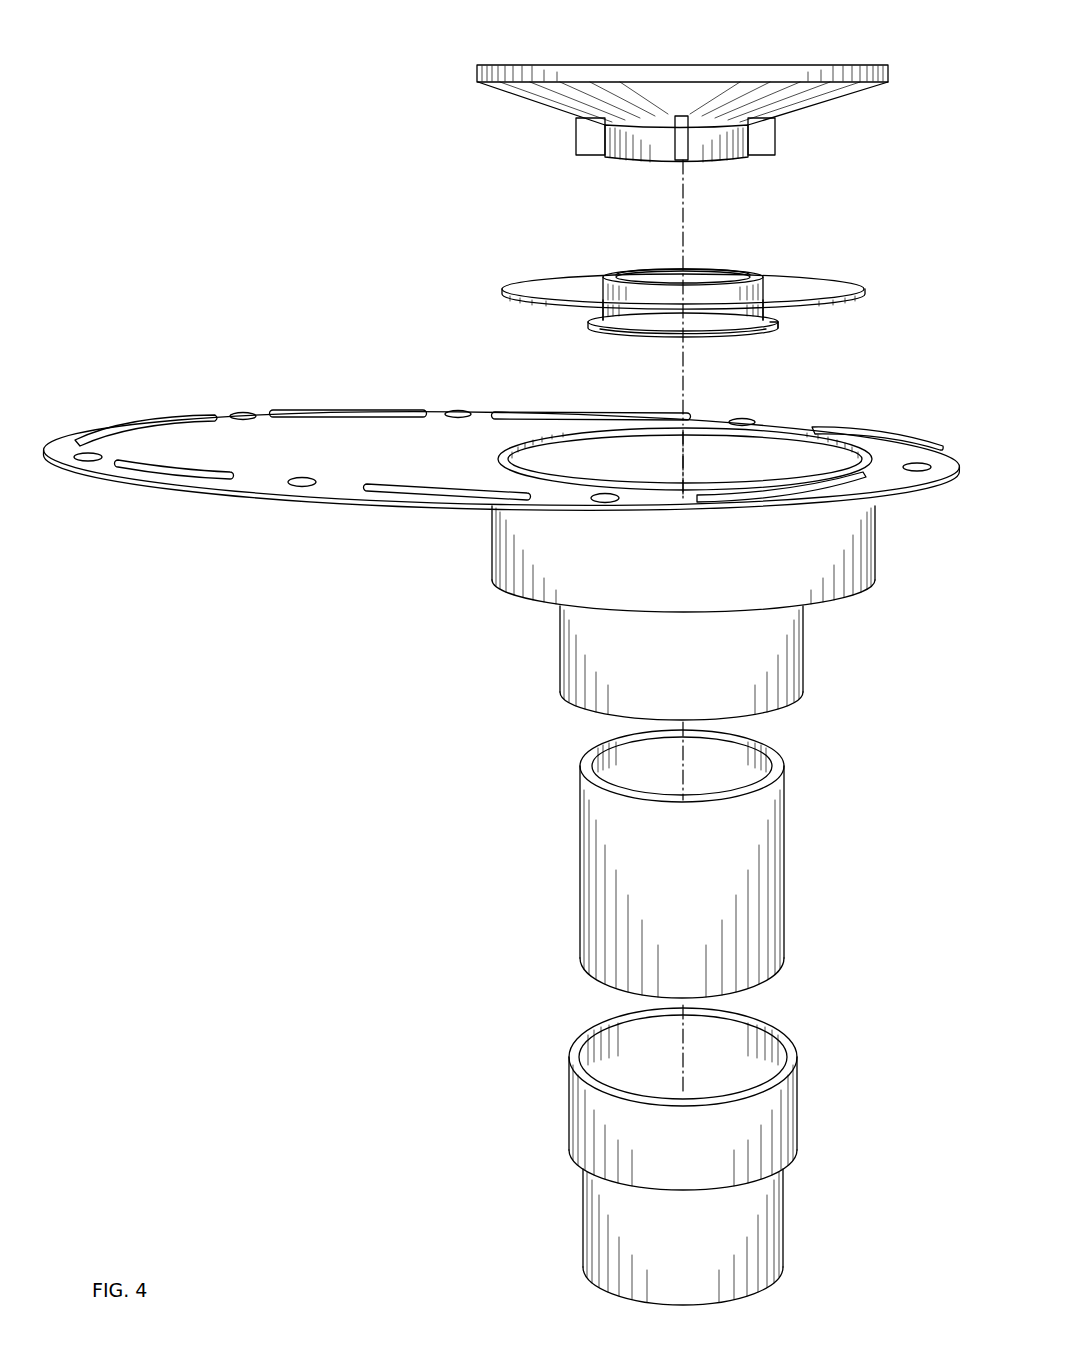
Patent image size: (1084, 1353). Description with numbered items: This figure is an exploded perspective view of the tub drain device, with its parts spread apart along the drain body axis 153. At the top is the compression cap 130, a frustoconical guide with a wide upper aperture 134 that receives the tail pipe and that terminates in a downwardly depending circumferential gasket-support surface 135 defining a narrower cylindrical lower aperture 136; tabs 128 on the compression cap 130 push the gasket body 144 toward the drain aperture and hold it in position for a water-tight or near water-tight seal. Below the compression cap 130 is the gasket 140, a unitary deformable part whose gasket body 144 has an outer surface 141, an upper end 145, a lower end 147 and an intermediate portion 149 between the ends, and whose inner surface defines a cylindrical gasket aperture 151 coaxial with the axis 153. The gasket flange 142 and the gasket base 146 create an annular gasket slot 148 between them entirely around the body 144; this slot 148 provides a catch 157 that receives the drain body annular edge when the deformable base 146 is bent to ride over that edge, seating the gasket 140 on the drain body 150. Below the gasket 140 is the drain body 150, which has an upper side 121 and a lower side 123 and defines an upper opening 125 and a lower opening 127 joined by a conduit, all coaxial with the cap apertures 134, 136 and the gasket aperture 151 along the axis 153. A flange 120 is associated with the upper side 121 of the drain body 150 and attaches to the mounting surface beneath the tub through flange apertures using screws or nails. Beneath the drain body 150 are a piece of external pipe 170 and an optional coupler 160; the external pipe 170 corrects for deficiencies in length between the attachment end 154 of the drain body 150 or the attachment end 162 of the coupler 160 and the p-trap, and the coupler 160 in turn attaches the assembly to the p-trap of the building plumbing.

The flange 120 is at (502, 551).
The upper side 121 is at (502, 516).
The lower side 123 is at (560, 692).
The upper opening 125 is at (570, 458).
The lower opening 127 is at (797, 702).
The tabs 128 is at (584, 146).
The compression cap 130 is at (478, 78).
The upper aperture 134 is at (664, 65).
The gasket-support surface 135 is at (627, 175).
The lower aperture 136 is at (707, 162).
The gasket 140 is at (671, 288).
The outer surface 141 is at (632, 290).
The gasket flange 142 is at (832, 286).
The gasket body 144 is at (732, 272).
The upper end 145 is at (642, 268).
The gasket base 146 is at (765, 330).
The lower end 147 is at (653, 335).
The gasket slot 148 is at (593, 312).
The intermediate portion 149 is at (763, 298).
The drain body 150 is at (641, 676).
The gasket aperture 151 is at (668, 262).
The drain body axis 153 is at (687, 465).
The attachment end 154 is at (822, 598).
The catch 157 is at (802, 328).
The coupler 160 is at (674, 1148).
The attachment end 162 is at (785, 1040).
The external pipe 170 is at (582, 882).